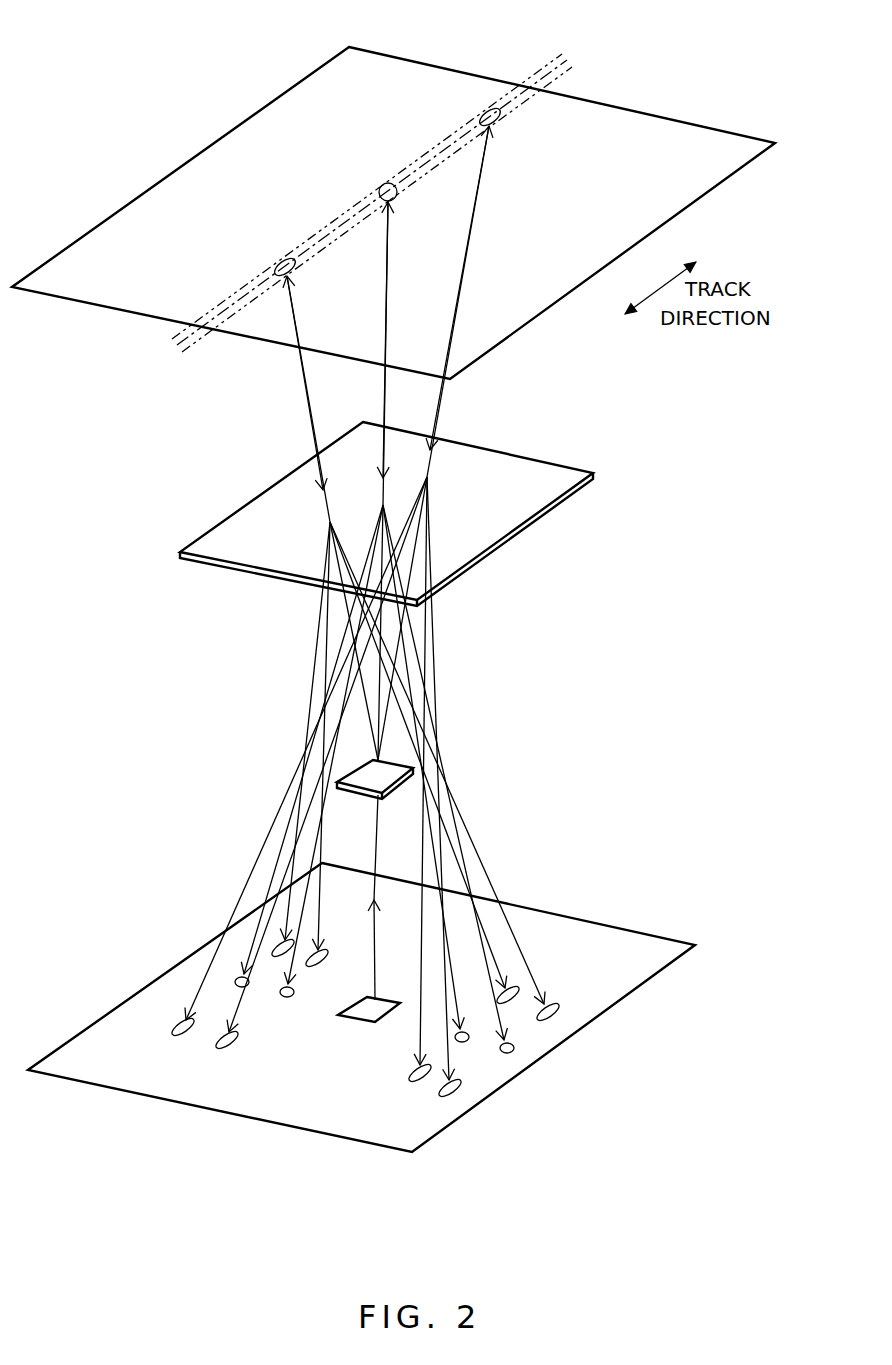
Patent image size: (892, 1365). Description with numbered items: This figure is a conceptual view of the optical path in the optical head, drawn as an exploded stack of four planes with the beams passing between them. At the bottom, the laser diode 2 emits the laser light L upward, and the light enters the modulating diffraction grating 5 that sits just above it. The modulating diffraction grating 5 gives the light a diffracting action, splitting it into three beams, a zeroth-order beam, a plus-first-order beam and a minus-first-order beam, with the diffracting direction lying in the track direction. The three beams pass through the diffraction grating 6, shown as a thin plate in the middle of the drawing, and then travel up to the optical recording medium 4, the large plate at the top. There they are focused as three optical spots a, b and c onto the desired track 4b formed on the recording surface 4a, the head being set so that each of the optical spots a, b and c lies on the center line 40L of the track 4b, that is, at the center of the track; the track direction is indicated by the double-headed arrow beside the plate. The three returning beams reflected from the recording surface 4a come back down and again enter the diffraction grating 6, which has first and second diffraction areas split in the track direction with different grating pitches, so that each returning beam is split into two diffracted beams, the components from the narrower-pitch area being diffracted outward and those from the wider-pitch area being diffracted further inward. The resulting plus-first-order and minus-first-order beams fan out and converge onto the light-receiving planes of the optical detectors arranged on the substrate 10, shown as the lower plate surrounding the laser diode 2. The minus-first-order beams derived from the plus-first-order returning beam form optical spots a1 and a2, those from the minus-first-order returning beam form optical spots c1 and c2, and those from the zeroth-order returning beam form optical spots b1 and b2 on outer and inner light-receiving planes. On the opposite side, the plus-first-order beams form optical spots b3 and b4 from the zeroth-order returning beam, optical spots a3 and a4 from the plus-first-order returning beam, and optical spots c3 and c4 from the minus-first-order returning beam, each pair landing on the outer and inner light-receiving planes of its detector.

The optical recording medium 4 is at (712, 93).
The recording surface 4a is at (330, 87).
The track 4b is at (523, 108).
The center line of the track 40L is at (548, 73).
The optical spot a is at (505, 119).
The optical spot b is at (399, 193).
The optical spot c is at (299, 268).
The diffraction grating 6 is at (560, 478).
The modulating diffraction grating 5 is at (392, 780).
The laser diode 2 is at (370, 1024).
The photodetector substrate 10 is at (153, 1137).
The laser light L is at (372, 903).
The optical spot a1 is at (175, 1027).
The optical spot a2 is at (225, 1048).
The optical spot a3 is at (453, 1096).
The optical spot a4 is at (418, 1082).
The optical spot b1 is at (234, 981).
The optical spot b2 is at (288, 1000).
The optical spot b3 is at (513, 1052).
The optical spot b4 is at (468, 1042).
The optical spot c1 is at (270, 946).
The optical spot c2 is at (316, 966).
The optical spot c3 is at (555, 1016).
The optical spot c4 is at (515, 1000).